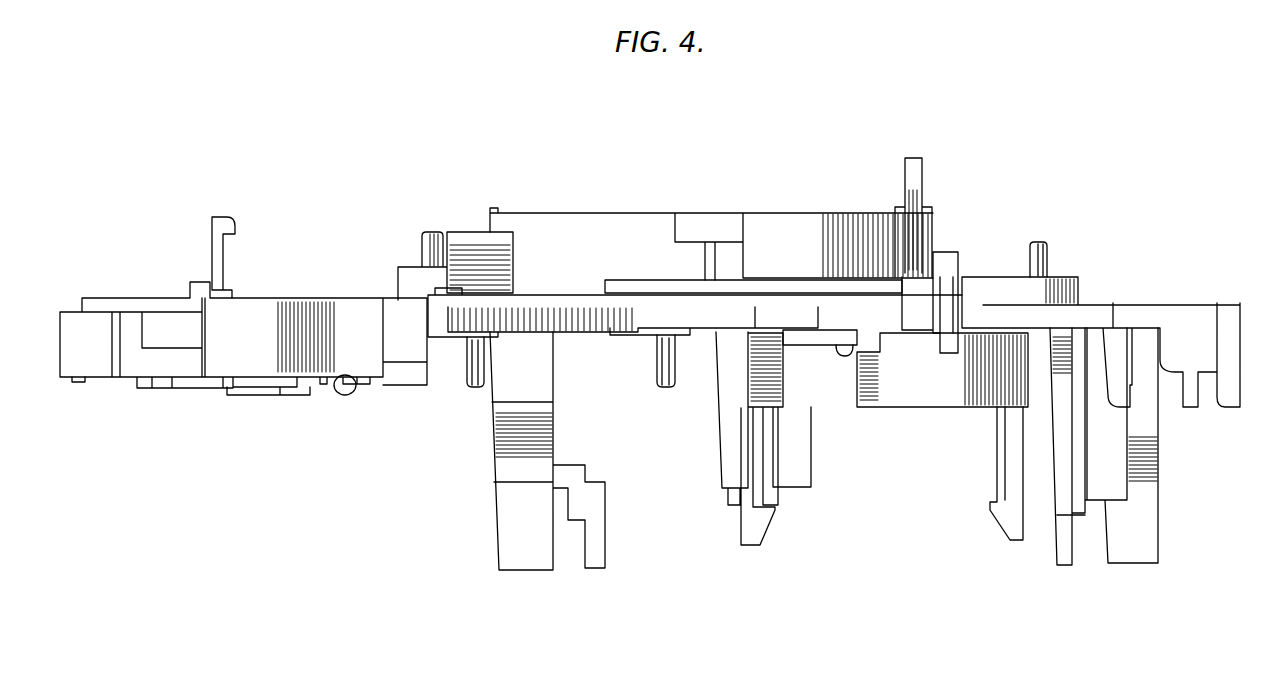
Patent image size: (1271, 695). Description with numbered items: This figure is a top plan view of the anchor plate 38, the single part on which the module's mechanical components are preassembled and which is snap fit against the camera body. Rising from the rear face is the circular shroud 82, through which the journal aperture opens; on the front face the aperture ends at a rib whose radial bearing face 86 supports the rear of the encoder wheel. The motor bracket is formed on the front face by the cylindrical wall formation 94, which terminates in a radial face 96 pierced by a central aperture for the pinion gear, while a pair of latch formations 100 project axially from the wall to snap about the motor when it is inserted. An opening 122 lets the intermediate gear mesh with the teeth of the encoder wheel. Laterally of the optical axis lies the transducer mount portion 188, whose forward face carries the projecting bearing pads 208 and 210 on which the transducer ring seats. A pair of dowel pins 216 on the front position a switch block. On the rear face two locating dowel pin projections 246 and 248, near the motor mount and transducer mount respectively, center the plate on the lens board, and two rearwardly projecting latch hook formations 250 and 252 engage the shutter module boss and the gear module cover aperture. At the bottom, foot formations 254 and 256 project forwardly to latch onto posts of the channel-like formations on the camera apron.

The anchor plate 38 is at (1122, 280).
The shroud 82 is at (787, 232).
The radial bearing face 86 is at (835, 307).
The cylindrical wall formation 94 is at (938, 390).
The radial face 96 is at (847, 352).
The latch formations 100 is at (763, 532).
The opening 122 is at (787, 313).
The transducer mount portion 188 is at (265, 298).
The bearing pad formation 208 is at (78, 384).
The bearing pad formation 210 is at (336, 375).
The dowel pins 216 is at (472, 377).
The locating dowel pin projection 246 is at (1040, 242).
The locating dowel pin projection 248 is at (435, 232).
The latch hook formation 250 is at (918, 160).
The latch hook formation 252 is at (223, 227).
The leg 254 is at (568, 550).
The foot formation 256 is at (1092, 550).